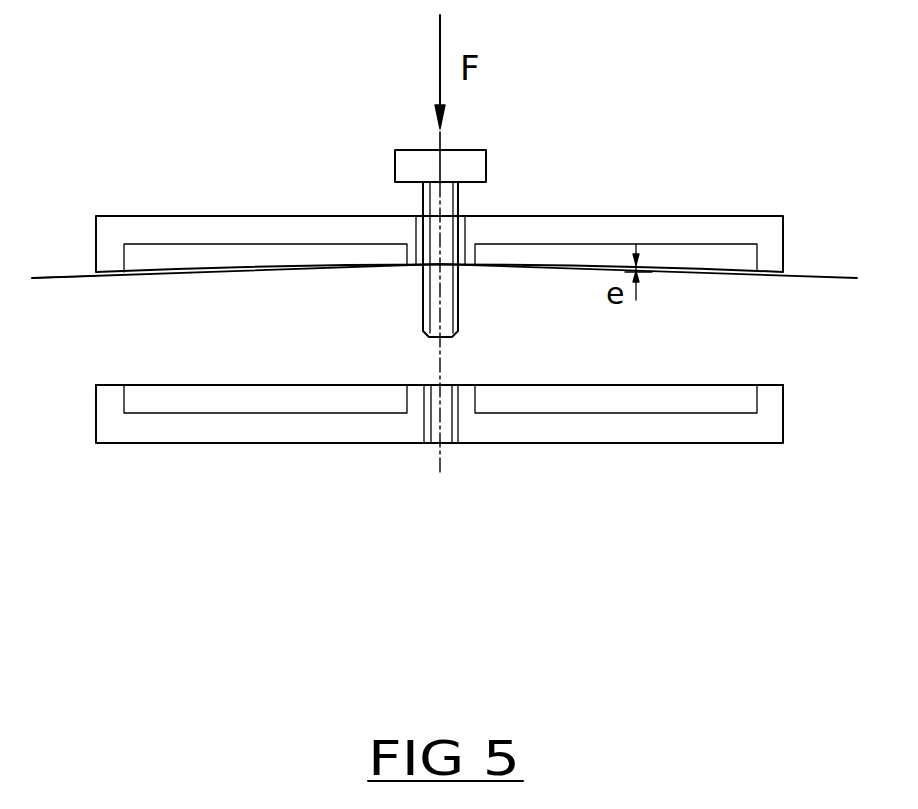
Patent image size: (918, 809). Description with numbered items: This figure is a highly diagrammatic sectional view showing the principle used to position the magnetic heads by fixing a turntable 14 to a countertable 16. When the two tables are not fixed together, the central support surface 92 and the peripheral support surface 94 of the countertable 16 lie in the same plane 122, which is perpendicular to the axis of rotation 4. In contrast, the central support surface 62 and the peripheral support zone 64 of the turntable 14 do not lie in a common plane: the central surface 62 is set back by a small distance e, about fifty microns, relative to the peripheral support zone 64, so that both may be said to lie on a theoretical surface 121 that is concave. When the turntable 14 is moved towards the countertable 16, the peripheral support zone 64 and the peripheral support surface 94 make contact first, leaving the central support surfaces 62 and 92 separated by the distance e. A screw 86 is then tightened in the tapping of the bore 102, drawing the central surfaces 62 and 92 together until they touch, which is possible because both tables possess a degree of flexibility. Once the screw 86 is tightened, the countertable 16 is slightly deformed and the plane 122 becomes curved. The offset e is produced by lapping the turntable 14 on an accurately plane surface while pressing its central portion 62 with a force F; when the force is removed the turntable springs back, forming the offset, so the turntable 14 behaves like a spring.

The axis of rotation 4 is at (443, 136).
The screw 86 is at (468, 166).
The turntable 14 is at (680, 235).
The countertable 16 is at (625, 425).
The central support surface 62 is at (418, 272).
The peripheral support zone 64 is at (108, 275).
The theoretical surface 121 is at (60, 275).
The plane 122 is at (305, 385).
The peripheral support surface 94 is at (112, 386).
The central support surface 92 is at (465, 385).
The bore 102 is at (425, 443).